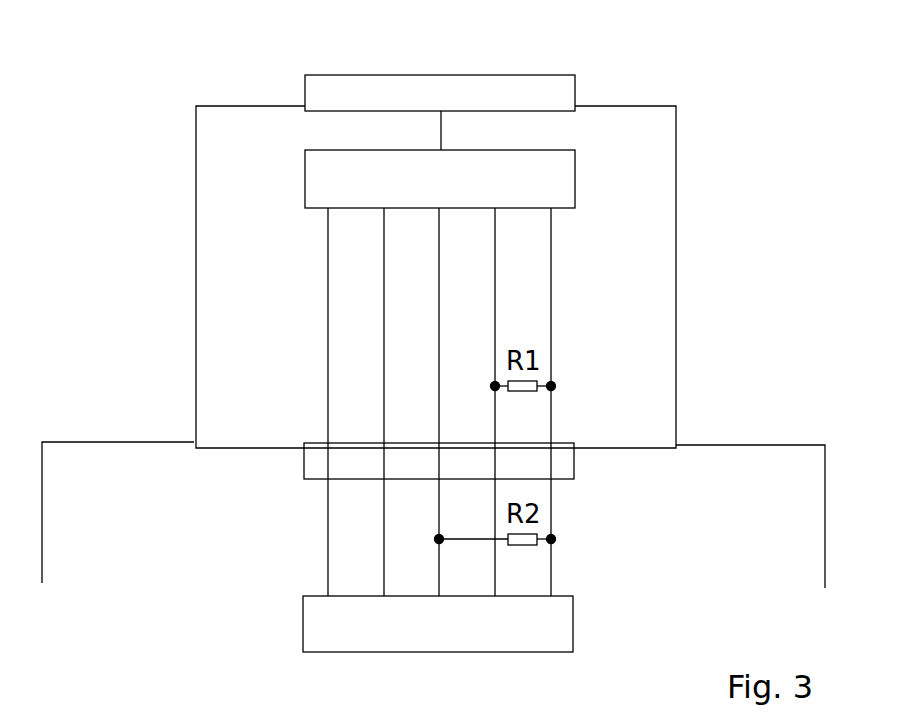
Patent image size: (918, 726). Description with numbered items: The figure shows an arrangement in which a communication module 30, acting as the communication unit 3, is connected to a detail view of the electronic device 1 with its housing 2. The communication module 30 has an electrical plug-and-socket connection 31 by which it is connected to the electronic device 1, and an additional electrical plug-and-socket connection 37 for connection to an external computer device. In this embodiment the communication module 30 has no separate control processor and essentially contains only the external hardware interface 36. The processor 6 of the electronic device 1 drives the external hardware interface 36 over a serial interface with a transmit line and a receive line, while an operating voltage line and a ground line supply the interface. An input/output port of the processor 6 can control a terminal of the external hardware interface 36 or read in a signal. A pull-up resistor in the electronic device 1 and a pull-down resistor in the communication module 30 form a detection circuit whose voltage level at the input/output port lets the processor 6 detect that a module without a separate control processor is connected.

The electronic device 1 is at (55, 419).
The housing 2 is at (737, 443).
The communication unit 3 is at (688, 85).
The communication module 30 is at (677, 157).
The electrical plug-and-socket connection 31 is at (575, 468).
The external hardware interface 36 is at (458, 194).
The additional electrical plug-and-socket connection 37 is at (513, 78).
The processor 6 is at (574, 628).